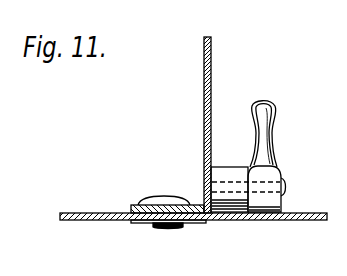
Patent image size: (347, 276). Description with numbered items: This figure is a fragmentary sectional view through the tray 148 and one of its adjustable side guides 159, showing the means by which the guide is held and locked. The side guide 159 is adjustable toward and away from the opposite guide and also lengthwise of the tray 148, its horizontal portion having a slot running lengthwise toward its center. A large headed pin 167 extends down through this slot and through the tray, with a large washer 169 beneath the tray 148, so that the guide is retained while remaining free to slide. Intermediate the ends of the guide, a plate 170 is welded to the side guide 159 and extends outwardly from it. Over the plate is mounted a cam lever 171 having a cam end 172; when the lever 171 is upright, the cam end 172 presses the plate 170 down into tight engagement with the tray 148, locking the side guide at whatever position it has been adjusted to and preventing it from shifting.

The tray 148 is at (93, 221).
The side guide 159 is at (204, 82).
The large headed pin 167 is at (166, 198).
The large washer 169 is at (143, 227).
The plate 170 is at (284, 213).
The cam lever 171 is at (277, 117).
The cam end 172 is at (287, 198).